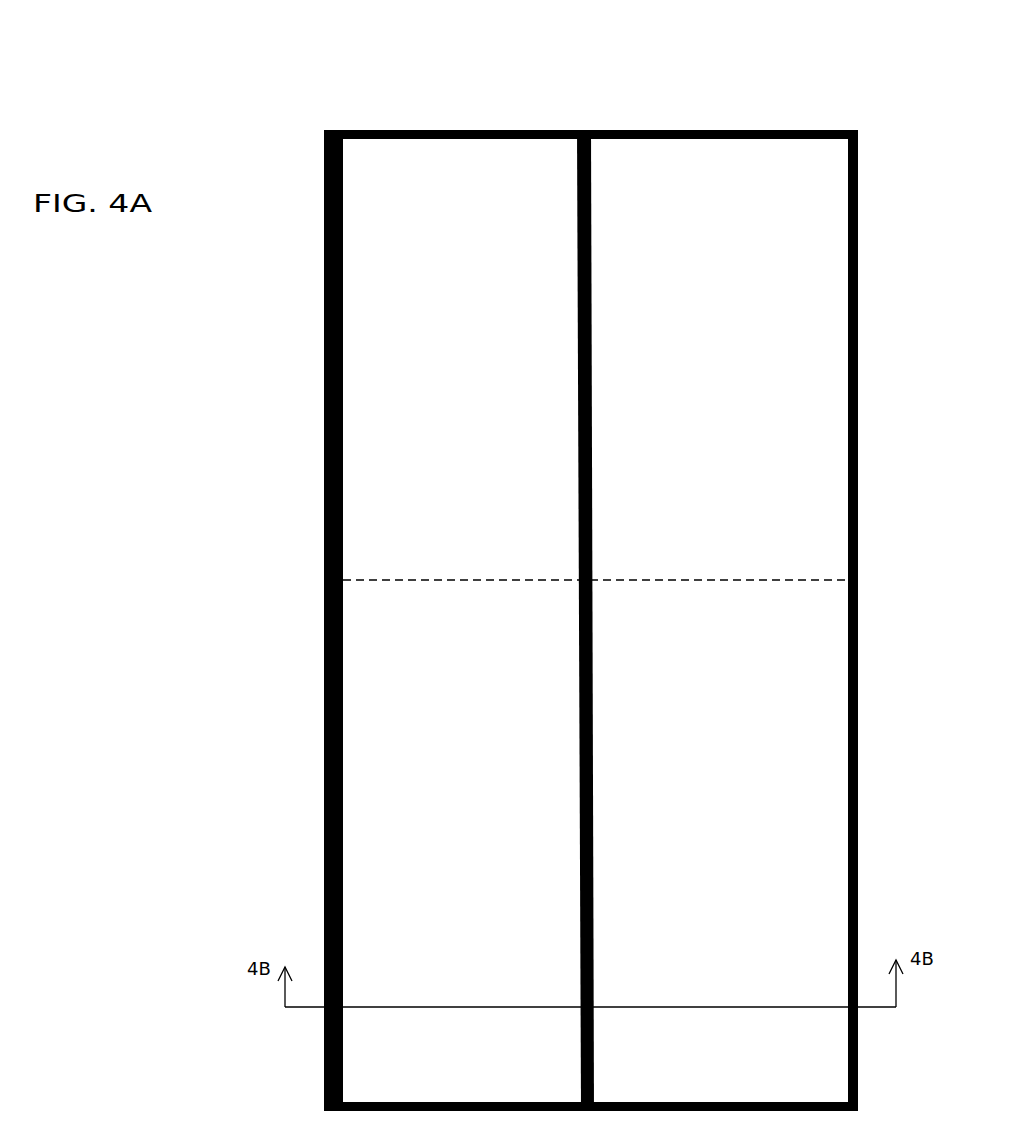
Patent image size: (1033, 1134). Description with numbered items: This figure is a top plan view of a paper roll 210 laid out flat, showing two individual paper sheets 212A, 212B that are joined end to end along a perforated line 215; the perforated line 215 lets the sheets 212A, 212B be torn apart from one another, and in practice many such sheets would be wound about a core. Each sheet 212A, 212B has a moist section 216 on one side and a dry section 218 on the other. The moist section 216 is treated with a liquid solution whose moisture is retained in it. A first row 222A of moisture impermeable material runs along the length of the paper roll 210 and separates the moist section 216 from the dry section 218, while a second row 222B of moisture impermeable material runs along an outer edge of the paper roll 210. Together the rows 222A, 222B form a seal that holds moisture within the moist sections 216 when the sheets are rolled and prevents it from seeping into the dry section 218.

The paper roll 210 is at (290, 127).
The first row of moisture impermeable material 222A is at (324, 288).
The second row of moisture impermeable material 222B is at (591, 210).
The individual paper sheet 212A is at (303, 430).
The individual paper sheet 212B is at (302, 905).
The perforated line 215 is at (400, 580).
The moist section 216 is at (465, 378).
The dry section 218 is at (720, 378).